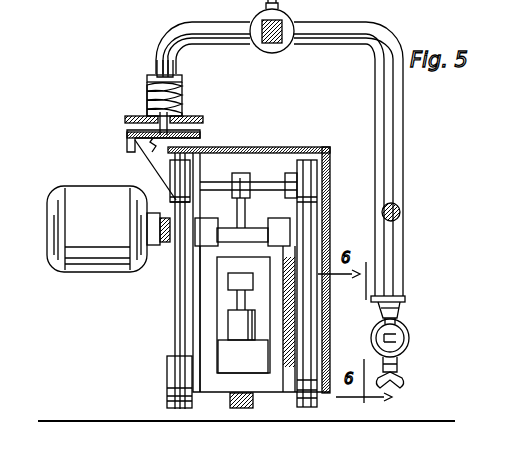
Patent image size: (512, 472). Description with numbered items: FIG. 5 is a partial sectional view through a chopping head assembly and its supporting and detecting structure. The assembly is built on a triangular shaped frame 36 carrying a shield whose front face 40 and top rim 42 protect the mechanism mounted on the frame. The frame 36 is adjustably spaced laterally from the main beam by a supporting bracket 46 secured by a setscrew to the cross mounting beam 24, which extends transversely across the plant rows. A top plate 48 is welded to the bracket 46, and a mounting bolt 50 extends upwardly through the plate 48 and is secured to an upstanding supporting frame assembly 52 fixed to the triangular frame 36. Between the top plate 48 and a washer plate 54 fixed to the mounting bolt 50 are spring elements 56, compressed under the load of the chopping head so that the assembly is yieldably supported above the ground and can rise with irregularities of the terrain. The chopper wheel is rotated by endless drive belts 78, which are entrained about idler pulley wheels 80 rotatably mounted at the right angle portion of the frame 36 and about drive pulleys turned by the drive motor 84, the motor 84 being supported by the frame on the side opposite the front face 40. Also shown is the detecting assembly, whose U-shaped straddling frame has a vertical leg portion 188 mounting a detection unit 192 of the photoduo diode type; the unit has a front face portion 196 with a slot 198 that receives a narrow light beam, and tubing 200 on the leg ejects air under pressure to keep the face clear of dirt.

The cross mounting beam 24 is at (286, 47).
The triangular shaped frame 36 is at (215, 385).
The front face 40 is at (328, 206).
The top rim 42 is at (258, 148).
The supporting bracket 46 is at (204, 22).
The top plate 48 is at (188, 118).
The mounting bolt 50 is at (162, 63).
The upstanding supporting frame assembly 52 is at (128, 137).
The washer plate 54 is at (150, 77).
The spring element 56 is at (147, 96).
The endless drive belt 78 is at (176, 281).
The idler pulley wheel 80 is at (167, 372).
The drive motor 84 is at (73, 276).
The vertical leg portion 188 is at (402, 277).
The detection unit 192 is at (410, 337).
The front face portion 196 is at (402, 354).
The slot 198 is at (396, 328).
The tubing 200 is at (384, 294).